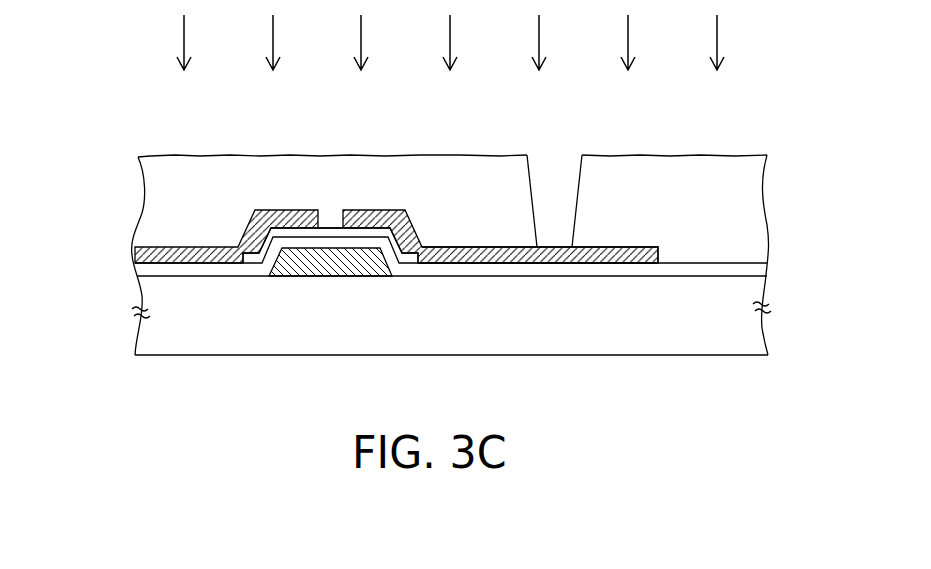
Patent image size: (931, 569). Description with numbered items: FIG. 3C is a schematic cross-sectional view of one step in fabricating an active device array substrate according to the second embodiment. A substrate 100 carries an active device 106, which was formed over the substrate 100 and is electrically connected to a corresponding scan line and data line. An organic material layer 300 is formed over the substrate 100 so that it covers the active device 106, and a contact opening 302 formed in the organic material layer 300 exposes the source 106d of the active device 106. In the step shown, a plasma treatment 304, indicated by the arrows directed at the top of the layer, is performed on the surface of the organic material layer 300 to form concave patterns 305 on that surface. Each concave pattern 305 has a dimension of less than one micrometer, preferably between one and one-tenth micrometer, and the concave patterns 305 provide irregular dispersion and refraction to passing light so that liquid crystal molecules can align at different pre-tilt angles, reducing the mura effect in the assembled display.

The substrate 100 is at (732, 340).
The active device 106 is at (160, 239).
The source 106d is at (562, 255).
The organic material layer 300 is at (170, 177).
The contact opening 302 is at (590, 182).
The plasma treatment 304 is at (718, 40).
The concave pattern 305 is at (684, 146).